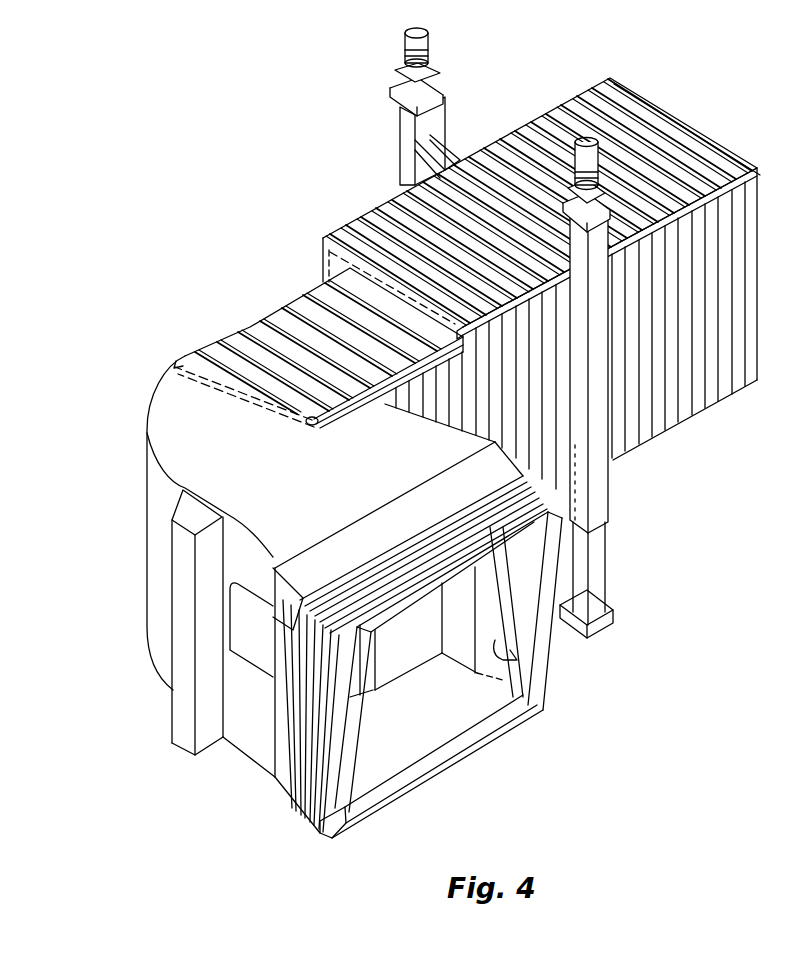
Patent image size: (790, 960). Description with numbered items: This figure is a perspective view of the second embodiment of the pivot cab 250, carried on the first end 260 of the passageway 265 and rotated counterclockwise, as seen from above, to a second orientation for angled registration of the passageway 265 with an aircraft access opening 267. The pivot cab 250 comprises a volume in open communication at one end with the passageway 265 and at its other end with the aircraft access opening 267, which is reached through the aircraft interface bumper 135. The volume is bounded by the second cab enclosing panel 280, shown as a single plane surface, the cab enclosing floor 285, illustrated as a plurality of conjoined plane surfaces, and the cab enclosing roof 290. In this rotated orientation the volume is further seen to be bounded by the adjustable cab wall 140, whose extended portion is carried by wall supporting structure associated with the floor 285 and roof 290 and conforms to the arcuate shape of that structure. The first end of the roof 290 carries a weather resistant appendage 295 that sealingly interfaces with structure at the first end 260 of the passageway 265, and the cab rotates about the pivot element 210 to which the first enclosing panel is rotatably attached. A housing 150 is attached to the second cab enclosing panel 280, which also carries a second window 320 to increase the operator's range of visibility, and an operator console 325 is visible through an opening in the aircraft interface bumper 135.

The aircraft interface bumper 135 is at (300, 780).
The adjustable cab wall 140 is at (150, 505).
The housing 150 is at (187, 690).
The pivot element 210 is at (306, 417).
The pivot cab 250 is at (535, 757).
The first end 260 is at (214, 318).
The passageway 265 is at (385, 217).
The aircraft access opening 267 is at (478, 796).
The second cab enclosing panel 280 is at (255, 742).
The cab enclosing floor 285 is at (437, 727).
The cab enclosing roof 290 is at (362, 495).
The weather resistant appendage 295 is at (226, 435).
The second window 320 is at (250, 622).
The operator console 325 is at (427, 655).